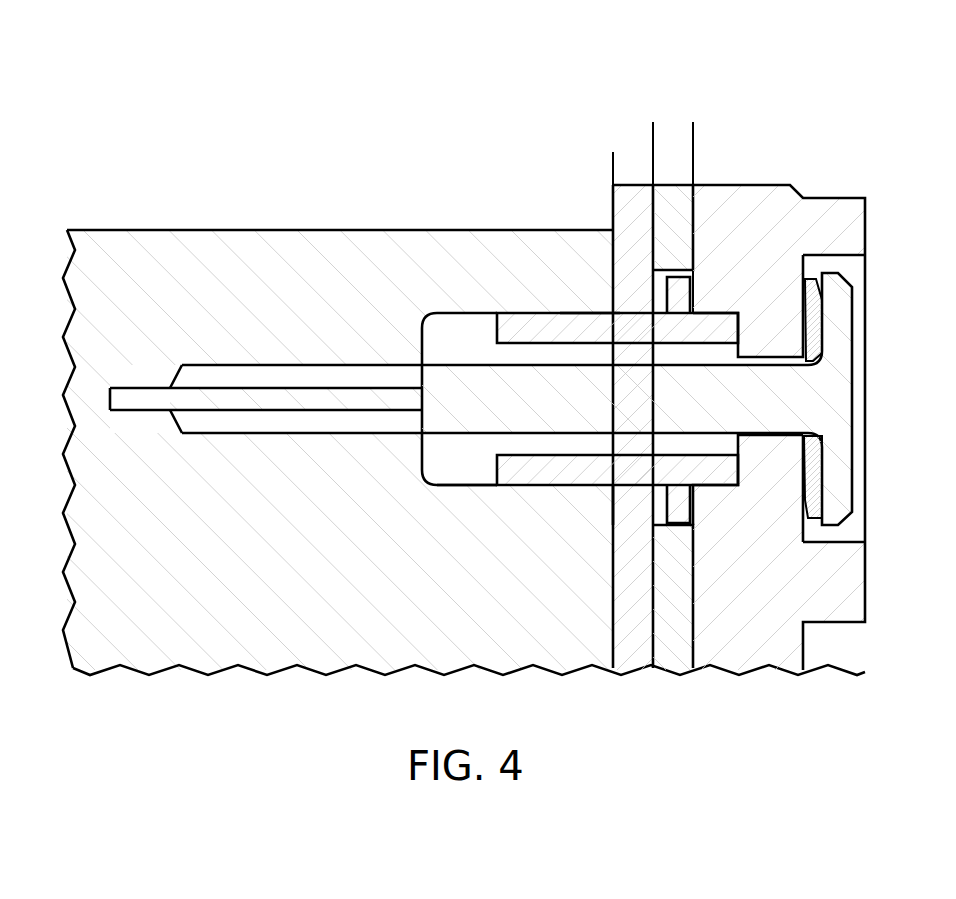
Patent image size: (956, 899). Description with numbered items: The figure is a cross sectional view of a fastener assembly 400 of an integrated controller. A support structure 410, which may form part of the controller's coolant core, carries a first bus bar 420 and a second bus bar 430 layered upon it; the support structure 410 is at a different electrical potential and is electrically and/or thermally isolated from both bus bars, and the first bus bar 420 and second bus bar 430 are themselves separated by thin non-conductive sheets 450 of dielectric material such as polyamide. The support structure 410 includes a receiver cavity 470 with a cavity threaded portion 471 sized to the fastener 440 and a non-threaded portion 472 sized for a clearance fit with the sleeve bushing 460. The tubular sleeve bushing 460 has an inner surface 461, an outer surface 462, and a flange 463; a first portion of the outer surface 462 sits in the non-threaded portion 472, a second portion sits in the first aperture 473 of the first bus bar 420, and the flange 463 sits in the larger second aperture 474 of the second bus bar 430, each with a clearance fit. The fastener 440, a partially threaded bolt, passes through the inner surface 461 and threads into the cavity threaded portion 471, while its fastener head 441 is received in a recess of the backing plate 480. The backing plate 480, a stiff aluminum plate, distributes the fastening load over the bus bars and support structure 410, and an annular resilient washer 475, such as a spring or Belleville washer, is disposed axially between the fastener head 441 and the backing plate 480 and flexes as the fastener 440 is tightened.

The fastener assembly 400 is at (112, 101).
The support structure 410 is at (183, 229).
The first bus bar 420 is at (620, 663).
The second bus bar 430 is at (678, 663).
The fastener 440 is at (470, 383).
The fastener head 441 is at (816, 324).
The non-conductive sheets 450 is at (722, 115).
The sleeve bushing 460 is at (505, 312).
The inner surface 461 is at (545, 481).
The outer surface 462 is at (580, 312).
The flange 463 is at (691, 285).
The receiver cavity 470 is at (352, 434).
The cavity threaded portion 471 is at (222, 434).
The non-threaded portion 472 is at (480, 486).
The first aperture 473 is at (610, 503).
The second aperture 474 is at (678, 524).
The resilient washer 475 is at (808, 493).
The backing plate 480 is at (799, 196).